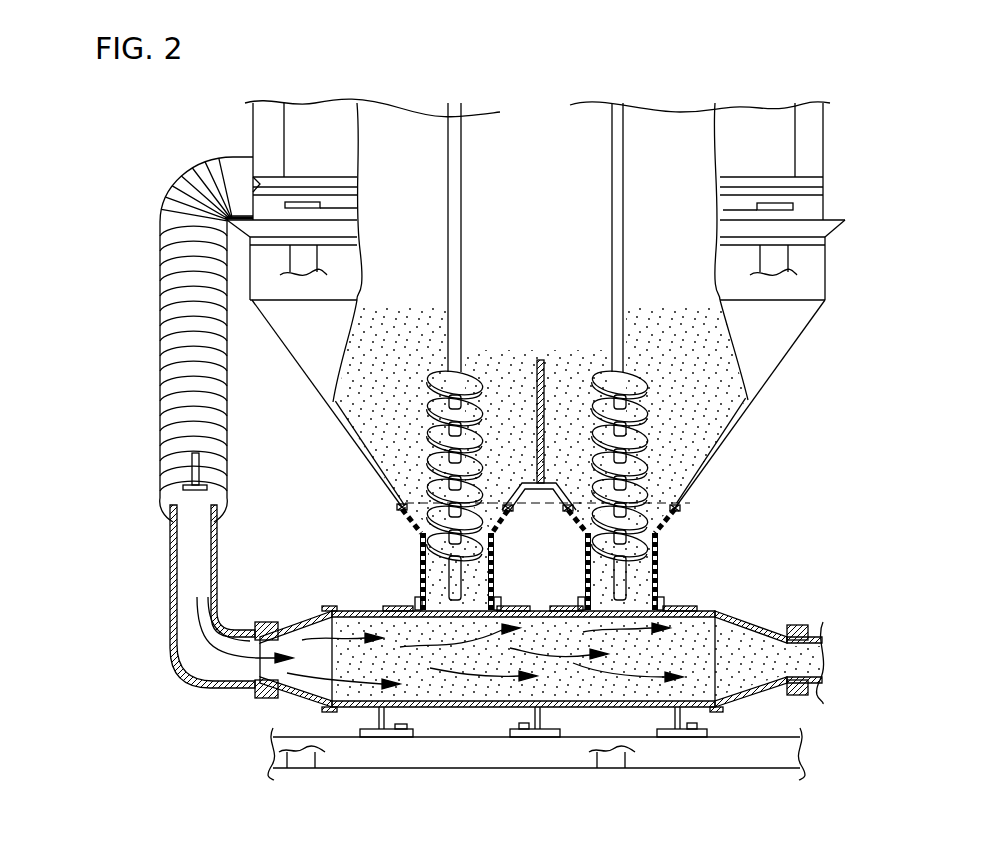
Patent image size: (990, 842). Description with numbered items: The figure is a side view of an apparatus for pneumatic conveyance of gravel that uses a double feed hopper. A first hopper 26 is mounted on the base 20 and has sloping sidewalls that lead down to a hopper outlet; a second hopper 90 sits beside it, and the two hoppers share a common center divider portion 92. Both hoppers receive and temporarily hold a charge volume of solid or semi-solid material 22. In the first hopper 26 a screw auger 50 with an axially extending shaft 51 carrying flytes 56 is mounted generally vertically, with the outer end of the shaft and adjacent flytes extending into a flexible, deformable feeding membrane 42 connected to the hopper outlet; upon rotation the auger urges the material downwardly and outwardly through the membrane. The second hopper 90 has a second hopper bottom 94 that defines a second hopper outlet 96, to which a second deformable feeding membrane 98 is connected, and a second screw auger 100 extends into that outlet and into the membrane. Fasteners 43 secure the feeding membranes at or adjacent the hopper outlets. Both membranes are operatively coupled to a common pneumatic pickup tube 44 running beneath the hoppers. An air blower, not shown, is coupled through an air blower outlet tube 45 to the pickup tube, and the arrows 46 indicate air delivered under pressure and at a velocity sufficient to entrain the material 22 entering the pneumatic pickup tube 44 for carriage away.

The base 20 is at (880, 180).
The solid or semi-solid material 22 is at (383, 338).
The first hopper 26 is at (298, 363).
The deformable feeding membrane 42 is at (418, 540).
The fasteners 43 is at (664, 527).
The pneumatic pickup tube 44 is at (700, 607).
The air blower outlet tube 45 is at (226, 468).
The reference arrows 46 is at (350, 640).
The screw auger 50 is at (463, 372).
The shaft 51 is at (488, 583).
The flytes 56 is at (427, 383).
The second hopper 90 is at (812, 318).
The common center divider portion 92 is at (541, 360).
The second hopper bottom 94 is at (678, 508).
The second hopper outlet 96 is at (655, 503).
The second deformable feeding membrane 98 is at (660, 540).
The second screw auger 100 is at (607, 373).